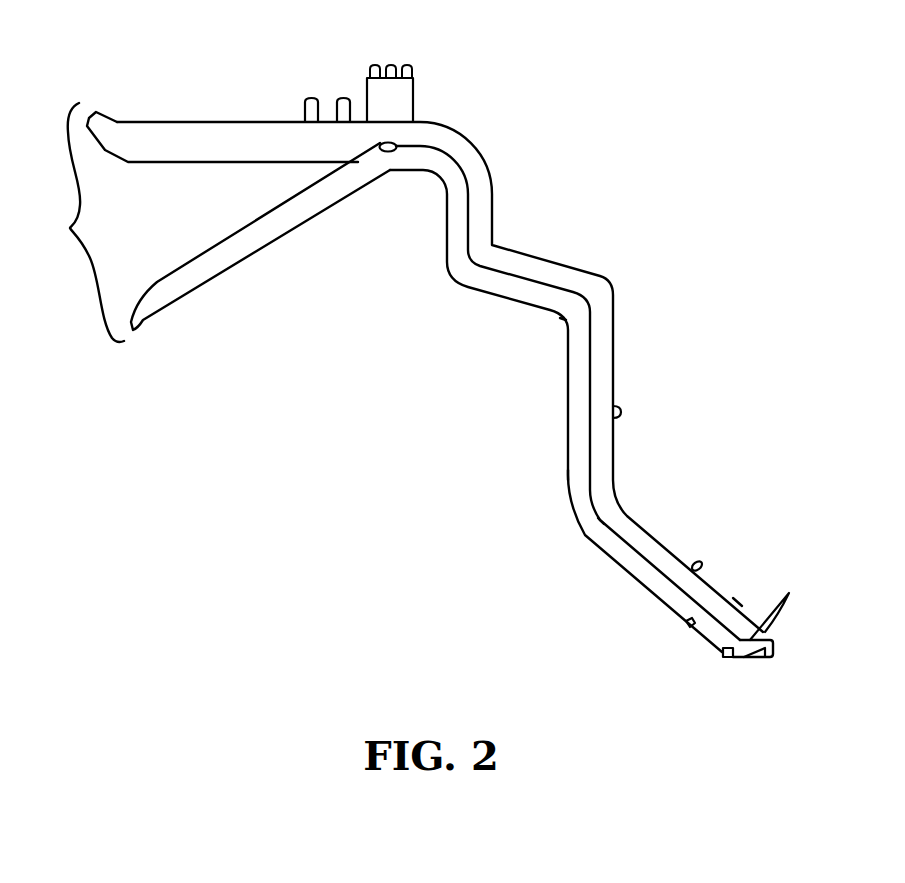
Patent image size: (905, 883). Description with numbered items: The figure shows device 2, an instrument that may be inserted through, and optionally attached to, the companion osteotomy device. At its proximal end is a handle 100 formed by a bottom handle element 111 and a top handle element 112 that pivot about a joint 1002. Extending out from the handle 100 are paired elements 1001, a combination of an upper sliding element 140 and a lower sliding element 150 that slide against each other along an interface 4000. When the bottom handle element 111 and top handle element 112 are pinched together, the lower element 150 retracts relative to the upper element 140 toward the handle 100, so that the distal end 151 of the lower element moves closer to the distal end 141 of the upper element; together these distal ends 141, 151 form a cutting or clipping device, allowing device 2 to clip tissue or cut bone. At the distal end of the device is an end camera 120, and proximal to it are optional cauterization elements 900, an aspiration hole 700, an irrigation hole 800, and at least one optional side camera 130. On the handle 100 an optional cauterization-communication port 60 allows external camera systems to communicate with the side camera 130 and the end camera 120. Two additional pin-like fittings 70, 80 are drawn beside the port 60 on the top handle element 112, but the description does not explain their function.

The device 2 is at (472, 402).
The cauterization-communication port 60 is at (413, 98).
The pin 70 is at (344, 97).
The pin 80 is at (311, 97).
The handle 100 is at (78, 222).
The bottom handle element 111 is at (260, 258).
The top handle element 112 is at (203, 122).
The distal end camera 120 is at (753, 659).
The side camera 130 is at (622, 410).
The upper sliding element 140 is at (615, 348).
The distal end of upper element 141 is at (738, 602).
The lower sliding element 150 is at (577, 481).
The distal end of lower element 151 is at (733, 661).
The aspiration hole 700 is at (721, 655).
The irrigation hole 800 is at (686, 626).
The cauterization elements 900 is at (789, 594).
The paired elements 1001 is at (565, 321).
The joint 1002 is at (390, 153).
The interface 4000 is at (603, 524).